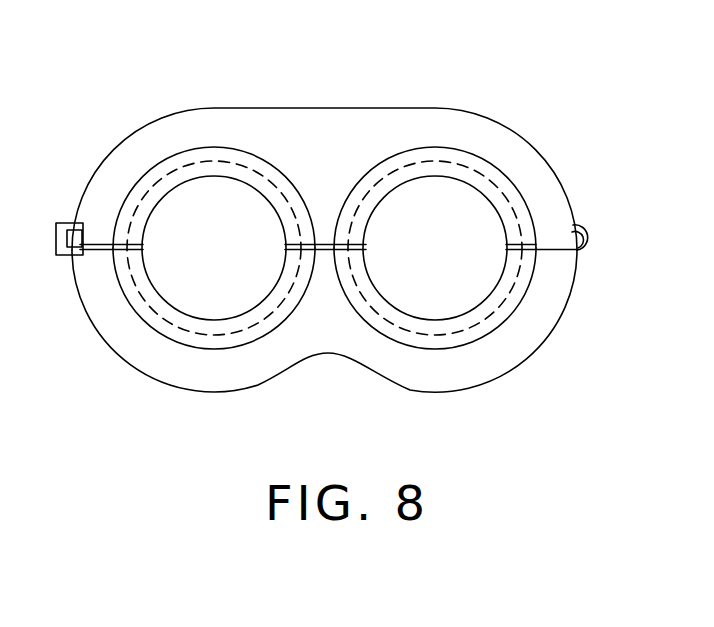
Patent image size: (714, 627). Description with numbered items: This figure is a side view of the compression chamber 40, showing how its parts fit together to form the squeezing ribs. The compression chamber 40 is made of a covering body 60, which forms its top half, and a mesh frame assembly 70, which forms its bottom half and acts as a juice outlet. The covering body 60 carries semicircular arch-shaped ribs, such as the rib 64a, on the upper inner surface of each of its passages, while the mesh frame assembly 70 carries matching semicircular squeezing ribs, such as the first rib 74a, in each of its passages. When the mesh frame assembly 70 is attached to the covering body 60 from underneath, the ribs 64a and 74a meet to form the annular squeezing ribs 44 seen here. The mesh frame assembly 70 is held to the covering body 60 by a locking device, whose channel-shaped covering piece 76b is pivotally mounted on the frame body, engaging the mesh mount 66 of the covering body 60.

The compression chamber 40 is at (353, 62).
The annular squeezing ribs 44 is at (347, 253).
The covering body 60 is at (360, 122).
The semicircular arch-shaped rib 64a is at (197, 152).
The mesh mount 66 is at (78, 238).
The mesh frame assembly 70 is at (407, 373).
The first rib 74a is at (203, 340).
The covering piece 76b is at (62, 236).